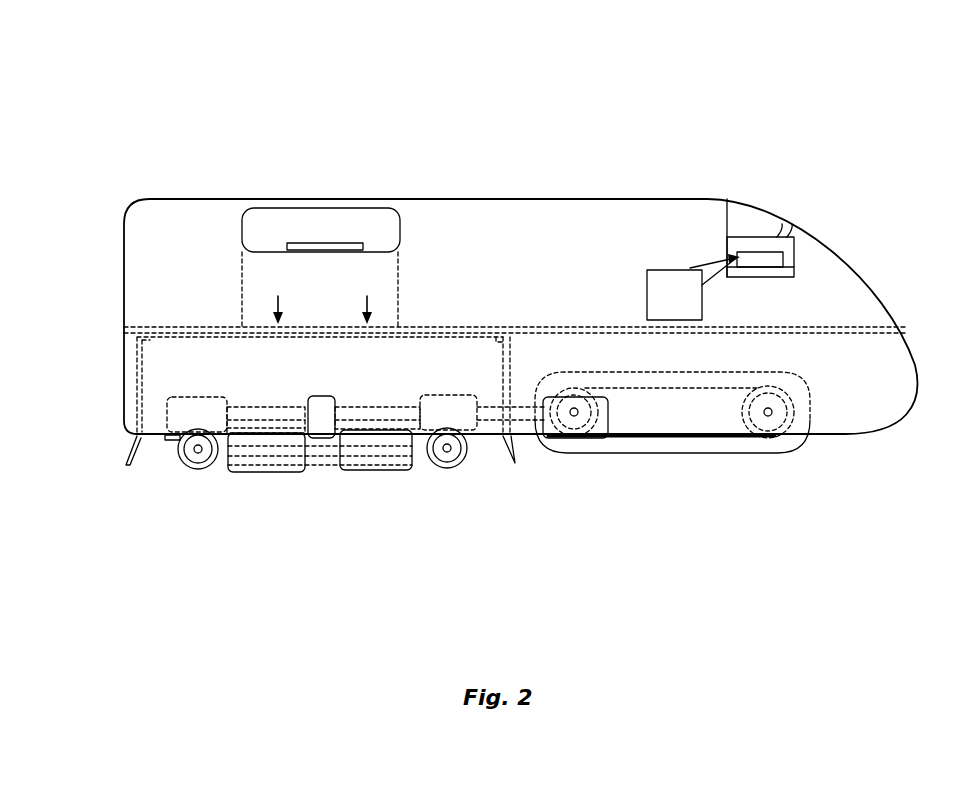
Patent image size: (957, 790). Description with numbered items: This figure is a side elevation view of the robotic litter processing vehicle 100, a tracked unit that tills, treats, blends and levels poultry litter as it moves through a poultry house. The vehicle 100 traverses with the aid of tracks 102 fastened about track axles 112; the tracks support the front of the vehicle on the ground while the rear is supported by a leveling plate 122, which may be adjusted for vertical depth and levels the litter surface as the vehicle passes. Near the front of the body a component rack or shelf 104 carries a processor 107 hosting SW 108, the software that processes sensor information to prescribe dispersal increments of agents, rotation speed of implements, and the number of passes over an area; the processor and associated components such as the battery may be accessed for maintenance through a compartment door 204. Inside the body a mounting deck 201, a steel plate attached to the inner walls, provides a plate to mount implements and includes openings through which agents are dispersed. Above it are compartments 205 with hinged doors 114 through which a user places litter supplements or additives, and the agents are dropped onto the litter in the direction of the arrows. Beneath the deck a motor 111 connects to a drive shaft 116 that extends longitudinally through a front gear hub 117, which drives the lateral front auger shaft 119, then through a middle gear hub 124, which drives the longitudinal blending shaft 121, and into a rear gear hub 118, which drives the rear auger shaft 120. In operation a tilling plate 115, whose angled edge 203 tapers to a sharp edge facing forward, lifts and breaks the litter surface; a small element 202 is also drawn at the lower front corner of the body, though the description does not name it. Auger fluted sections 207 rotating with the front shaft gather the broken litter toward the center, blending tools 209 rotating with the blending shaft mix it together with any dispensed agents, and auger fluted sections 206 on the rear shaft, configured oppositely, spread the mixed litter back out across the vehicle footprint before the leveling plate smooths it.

The robotic litter processing vehicle 100 is at (606, 120).
The tracks 102 is at (672, 455).
The component rack or shelf 104 is at (727, 258).
The processor 107 is at (783, 258).
The SW 108 is at (645, 306).
The motor 111 is at (607, 420).
The track axles 112 is at (768, 390).
The hinged doors 114 is at (402, 228).
The tilling plate 115 is at (503, 392).
The drive shaft 116 is at (518, 405).
The front gear hub 117 is at (448, 395).
The rear gear hub 118 is at (212, 397).
The front auger shaft 119 is at (445, 432).
The rear auger shaft 120 is at (200, 436).
The blending shaft 121 is at (280, 434).
The leveling plate 122 is at (137, 383).
The middle gear hub 124 is at (322, 396).
The mounting deck 201 is at (214, 327).
The front flap 202 is at (127, 455).
The angled edge 203 is at (503, 440).
The compartment door 204 is at (762, 212).
The compartments 205 is at (242, 278).
The auger fluted sections 206 is at (178, 450).
The auger fluted sections 207 is at (440, 470).
The blending tools 209 is at (397, 472).